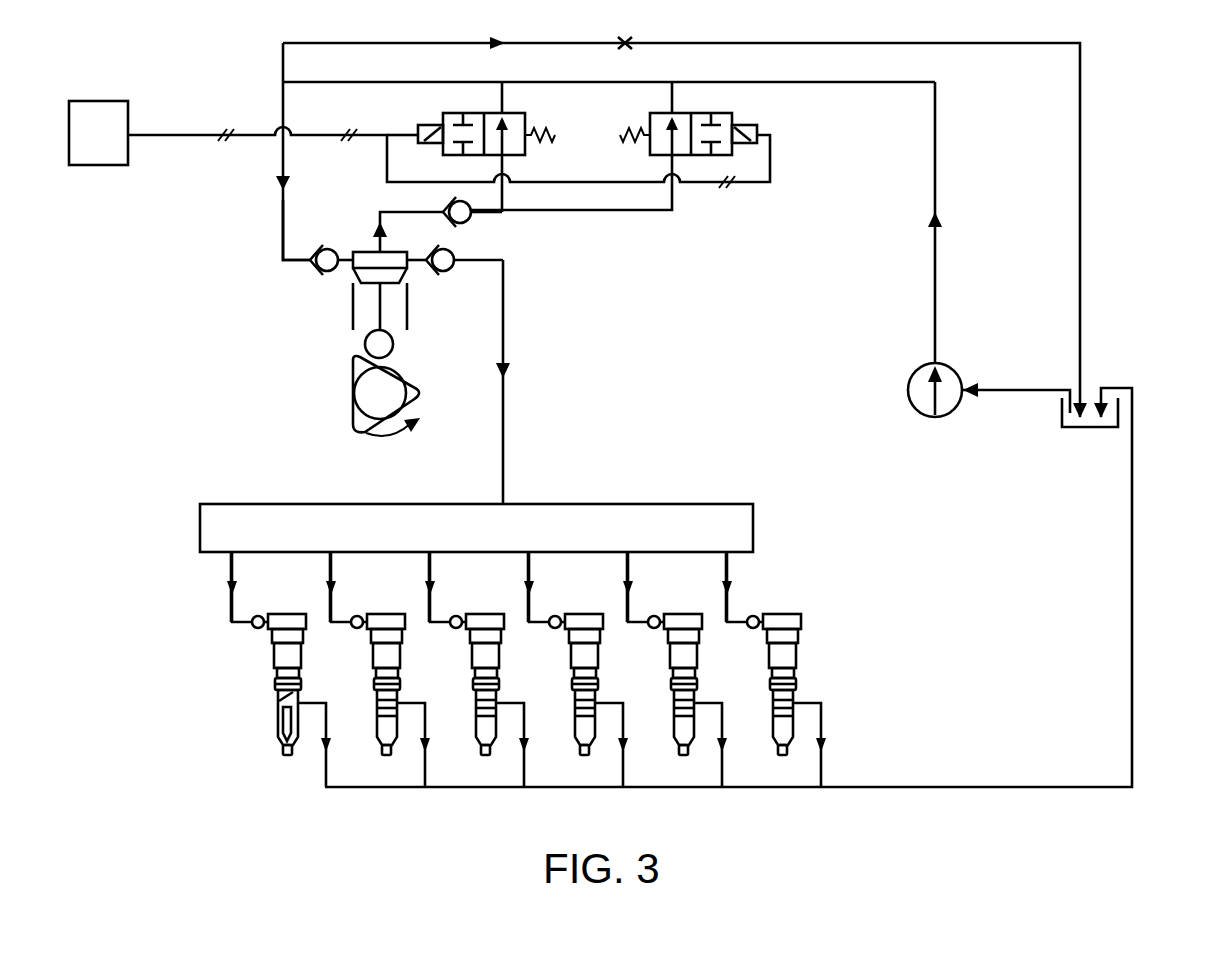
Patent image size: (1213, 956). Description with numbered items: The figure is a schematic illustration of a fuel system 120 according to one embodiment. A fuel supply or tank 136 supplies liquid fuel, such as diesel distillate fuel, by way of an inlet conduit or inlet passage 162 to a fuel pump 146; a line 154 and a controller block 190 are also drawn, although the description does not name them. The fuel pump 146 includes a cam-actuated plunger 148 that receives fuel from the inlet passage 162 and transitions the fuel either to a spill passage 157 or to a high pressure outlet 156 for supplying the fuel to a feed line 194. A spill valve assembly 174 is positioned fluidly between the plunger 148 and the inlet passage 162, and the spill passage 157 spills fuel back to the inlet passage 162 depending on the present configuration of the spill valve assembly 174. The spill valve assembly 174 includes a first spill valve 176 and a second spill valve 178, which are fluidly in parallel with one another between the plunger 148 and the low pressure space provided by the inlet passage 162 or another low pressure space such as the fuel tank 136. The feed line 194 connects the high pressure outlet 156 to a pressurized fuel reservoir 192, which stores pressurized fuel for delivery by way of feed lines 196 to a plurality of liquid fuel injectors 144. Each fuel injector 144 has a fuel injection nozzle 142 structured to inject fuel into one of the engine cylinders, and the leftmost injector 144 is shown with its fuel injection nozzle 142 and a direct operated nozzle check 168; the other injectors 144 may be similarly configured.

The fuel system 120 is at (1140, 72).
The fuel tank 136 is at (1062, 404).
The fuel injection nozzle 142 is at (278, 734).
The liquid fuel injectors 144 is at (768, 652).
The fuel pump 146 is at (360, 344).
The cam-actuated plunger 148 is at (400, 285).
The low pressure supply line 154 is at (827, 82).
The high pressure outlet 156 is at (431, 252).
The spill passage 157 is at (380, 212).
The inlet passage 162 is at (283, 212).
The direct operated nozzle check 168 is at (278, 700).
The spill valve assembly 174 is at (418, 112).
The first spill valve 176 is at (516, 112).
The second spill valve 178 is at (690, 112).
The electronic controller 190 is at (106, 101).
The pressurized fuel reservoir 192 is at (200, 510).
The feed line 194 is at (503, 326).
The feed lines 196 is at (330, 565).